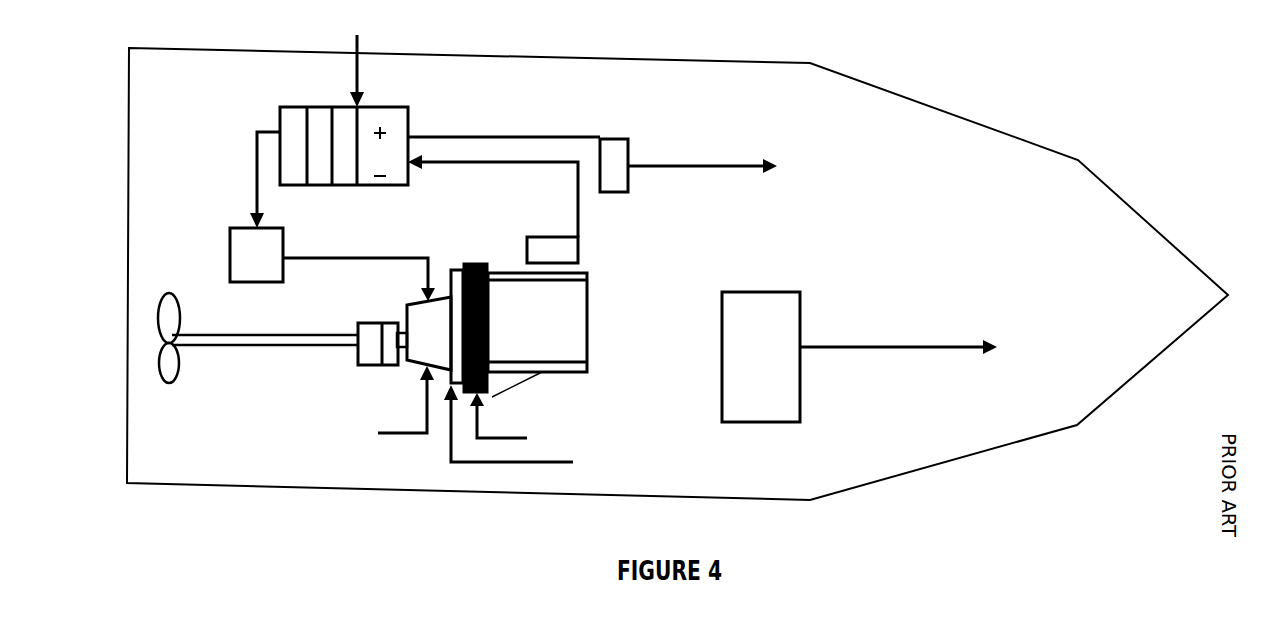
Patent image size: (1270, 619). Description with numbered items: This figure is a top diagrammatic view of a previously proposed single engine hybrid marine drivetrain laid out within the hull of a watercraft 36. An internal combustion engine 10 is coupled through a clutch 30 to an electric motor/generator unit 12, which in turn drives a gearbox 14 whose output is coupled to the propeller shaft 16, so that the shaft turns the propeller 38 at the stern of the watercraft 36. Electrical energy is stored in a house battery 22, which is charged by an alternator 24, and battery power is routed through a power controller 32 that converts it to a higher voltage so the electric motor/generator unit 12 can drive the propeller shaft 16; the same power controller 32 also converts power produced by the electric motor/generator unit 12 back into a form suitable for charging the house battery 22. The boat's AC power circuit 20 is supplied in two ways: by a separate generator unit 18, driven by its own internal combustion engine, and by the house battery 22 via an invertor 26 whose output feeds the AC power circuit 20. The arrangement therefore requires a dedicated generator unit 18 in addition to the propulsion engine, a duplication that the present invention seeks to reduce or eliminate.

The internal combustion engine 10 is at (550, 330).
The electric motor/generator unit 12 is at (521, 428).
The gearbox 14 is at (402, 366).
The propeller shaft 16 is at (270, 345).
The generator unit 18 is at (783, 320).
The AC power circuit 20 is at (907, 347).
The house battery 22 is at (344, 96).
The alternator 24 is at (567, 253).
The invertor 26 is at (615, 153).
The clutch 30 is at (510, 418).
The power controller 32 is at (247, 240).
The watercraft 36 is at (970, 450).
The propeller 38 is at (168, 383).